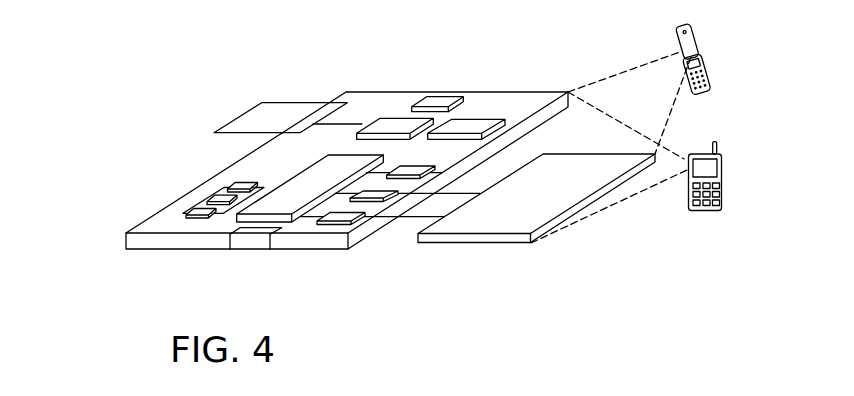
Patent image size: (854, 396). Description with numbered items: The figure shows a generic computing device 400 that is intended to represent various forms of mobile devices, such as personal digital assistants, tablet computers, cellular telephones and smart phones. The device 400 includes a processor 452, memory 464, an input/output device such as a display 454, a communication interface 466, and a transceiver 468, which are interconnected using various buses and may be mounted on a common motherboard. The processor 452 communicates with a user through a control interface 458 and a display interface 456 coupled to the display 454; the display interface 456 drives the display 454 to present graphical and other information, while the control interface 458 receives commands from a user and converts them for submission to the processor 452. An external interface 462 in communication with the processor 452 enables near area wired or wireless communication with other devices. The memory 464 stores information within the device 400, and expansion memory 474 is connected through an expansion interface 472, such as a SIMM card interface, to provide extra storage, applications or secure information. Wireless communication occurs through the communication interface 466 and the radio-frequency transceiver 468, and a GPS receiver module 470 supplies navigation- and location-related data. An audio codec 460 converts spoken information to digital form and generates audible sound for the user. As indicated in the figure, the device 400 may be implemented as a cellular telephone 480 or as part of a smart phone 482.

The computing device 400 is at (92, 253).
The processor 452 is at (282, 191).
The display 454 is at (570, 166).
The display interface 456 is at (347, 213).
The control interface 458 is at (384, 194).
The audio codec 460 is at (413, 169).
The external interface 462 is at (250, 236).
The memory 464 is at (213, 198).
The communication interface 466 is at (395, 120).
The transceiver 468 is at (472, 122).
The GPS receiver module 470 is at (438, 101).
The expansion interface 472 is at (331, 101).
The expansion memory 474 is at (262, 101).
The cellular telephone 480 is at (693, 30).
The smart phone 482 is at (702, 153).